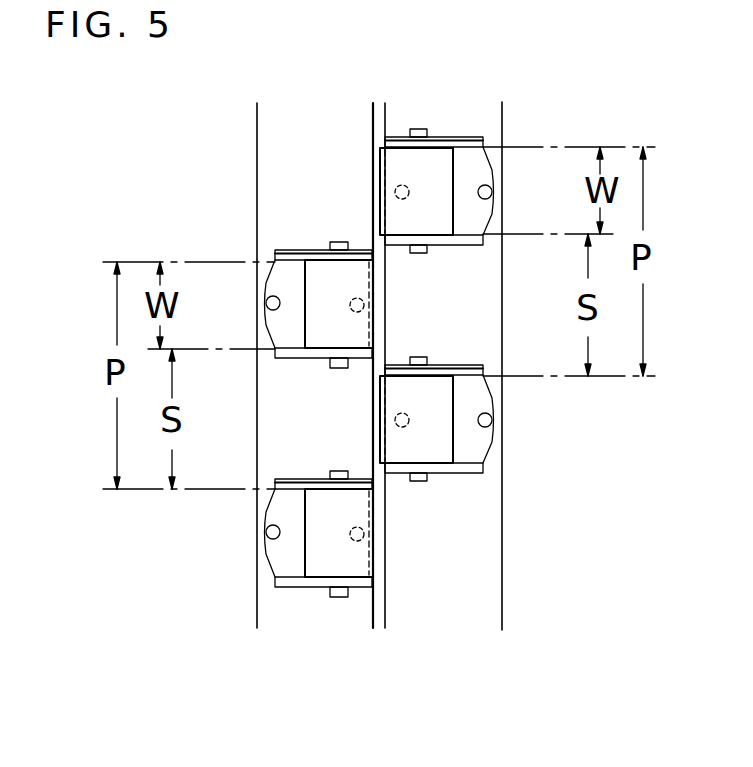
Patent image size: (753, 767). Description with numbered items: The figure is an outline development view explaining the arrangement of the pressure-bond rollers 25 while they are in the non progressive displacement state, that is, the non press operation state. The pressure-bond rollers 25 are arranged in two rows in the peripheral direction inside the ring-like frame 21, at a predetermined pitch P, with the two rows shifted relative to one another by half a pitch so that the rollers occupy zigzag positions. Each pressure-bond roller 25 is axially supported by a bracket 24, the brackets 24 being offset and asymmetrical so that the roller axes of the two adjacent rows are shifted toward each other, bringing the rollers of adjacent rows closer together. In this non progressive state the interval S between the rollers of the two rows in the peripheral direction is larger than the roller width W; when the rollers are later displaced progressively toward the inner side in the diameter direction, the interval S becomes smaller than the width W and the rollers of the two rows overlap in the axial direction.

The ring-like frame 21 is at (503, 118).
The bracket 24 is at (469, 162).
The pressure-bond roller 25 is at (395, 168).